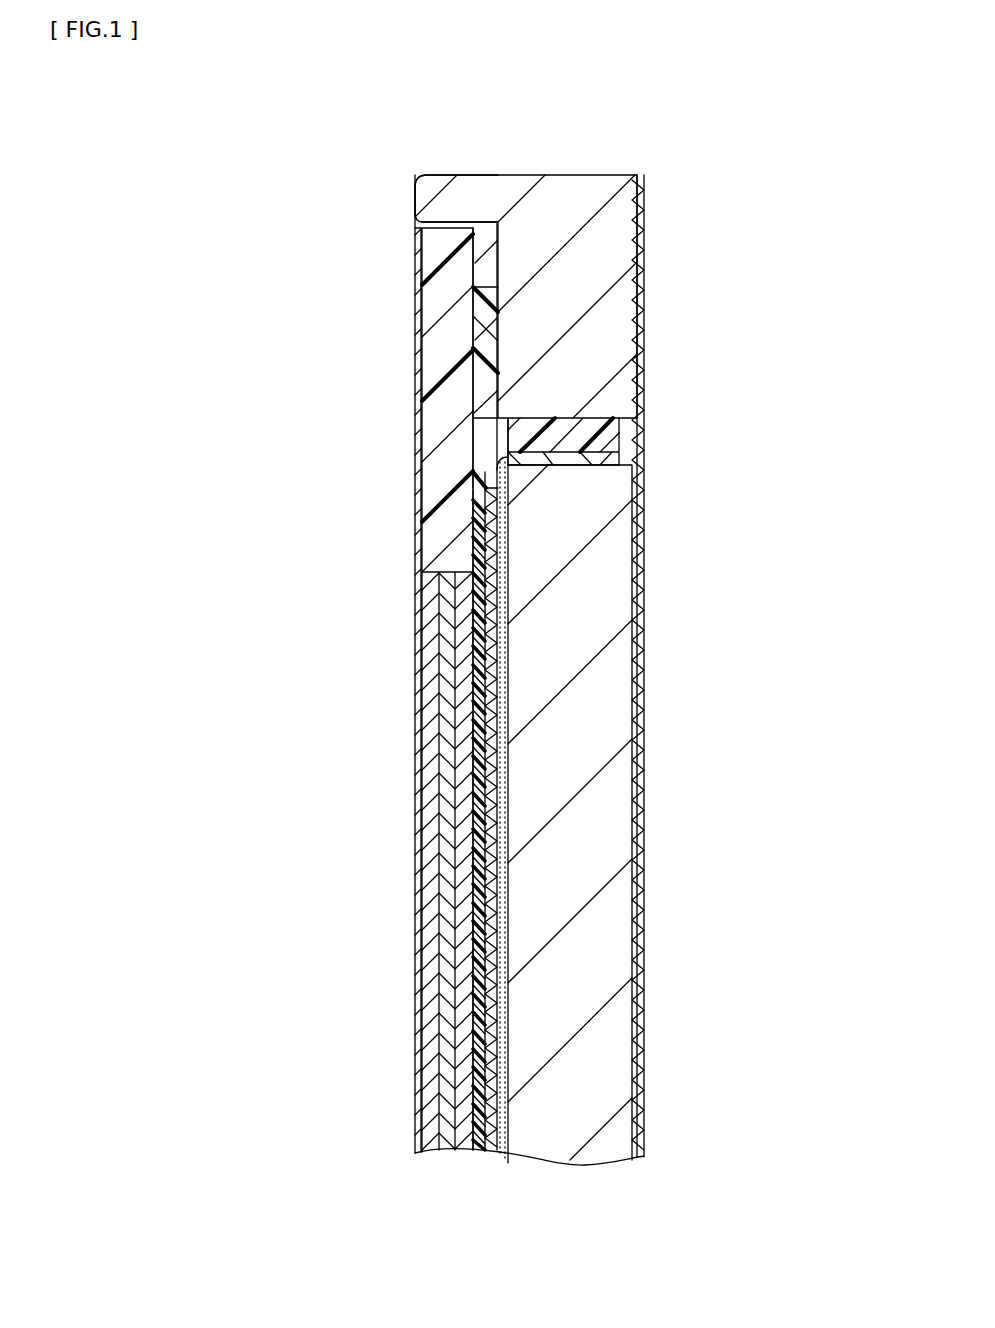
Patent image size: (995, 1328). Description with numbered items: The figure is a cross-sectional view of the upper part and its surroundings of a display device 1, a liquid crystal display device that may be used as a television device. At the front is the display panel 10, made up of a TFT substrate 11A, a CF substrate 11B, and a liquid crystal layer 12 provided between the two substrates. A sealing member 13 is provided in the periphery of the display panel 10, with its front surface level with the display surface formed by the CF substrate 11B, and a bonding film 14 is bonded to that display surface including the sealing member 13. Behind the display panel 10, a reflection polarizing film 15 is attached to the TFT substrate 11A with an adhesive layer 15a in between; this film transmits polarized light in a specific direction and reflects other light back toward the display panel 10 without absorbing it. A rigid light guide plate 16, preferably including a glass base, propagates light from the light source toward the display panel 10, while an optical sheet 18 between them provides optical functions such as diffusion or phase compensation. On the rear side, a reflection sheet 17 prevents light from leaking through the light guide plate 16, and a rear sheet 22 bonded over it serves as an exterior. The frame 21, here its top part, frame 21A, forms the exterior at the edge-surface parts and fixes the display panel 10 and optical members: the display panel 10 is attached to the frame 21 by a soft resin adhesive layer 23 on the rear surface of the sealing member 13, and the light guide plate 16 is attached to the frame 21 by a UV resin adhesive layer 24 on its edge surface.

The display device 1 is at (559, 666).
The display panel 10 is at (408, 909).
The TFT substrate 11A is at (435, 593).
The CF substrate 11B is at (465, 713).
The liquid crystal layer 12 is at (448, 658).
The sealing member 13 is at (438, 295).
The bonding film 14 is at (418, 453).
The reflection polarizing film 15 is at (477, 857).
The adhesive layer 15a is at (462, 790).
The light guide plate 16 is at (620, 773).
The reflection sheet 17 is at (640, 860).
The optical sheet 18 is at (505, 685).
The frame 21 is at (594, 296).
The frame 21A is at (456, 198).
The rear sheet 22 is at (637, 357).
The adhesive layer 23 is at (485, 373).
The adhesive layer 24 is at (572, 443).